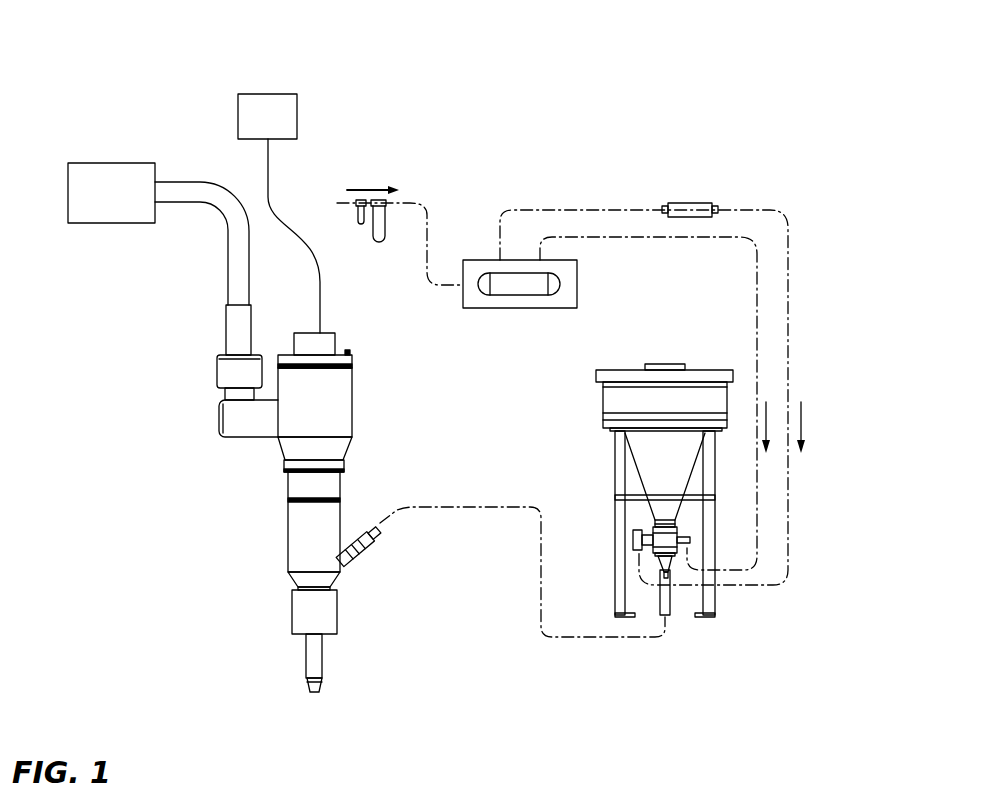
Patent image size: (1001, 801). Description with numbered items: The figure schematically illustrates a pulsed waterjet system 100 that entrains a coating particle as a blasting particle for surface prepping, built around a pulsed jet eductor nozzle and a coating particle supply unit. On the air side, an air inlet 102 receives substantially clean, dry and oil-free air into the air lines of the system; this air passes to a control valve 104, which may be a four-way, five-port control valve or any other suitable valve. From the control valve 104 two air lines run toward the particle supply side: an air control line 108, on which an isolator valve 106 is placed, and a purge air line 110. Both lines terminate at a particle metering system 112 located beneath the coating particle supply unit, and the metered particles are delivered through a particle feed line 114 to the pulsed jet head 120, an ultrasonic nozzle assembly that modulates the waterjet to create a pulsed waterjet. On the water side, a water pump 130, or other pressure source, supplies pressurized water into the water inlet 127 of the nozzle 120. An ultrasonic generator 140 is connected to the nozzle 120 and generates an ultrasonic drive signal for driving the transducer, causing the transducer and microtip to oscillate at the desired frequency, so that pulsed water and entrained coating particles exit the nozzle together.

The pulsed waterjet system 100 is at (792, 122).
The air inlet 102 is at (388, 222).
The control valve 104 is at (527, 280).
The isolator valve 106 is at (678, 203).
The air control line 108 is at (788, 367).
The purge air line 110 is at (755, 542).
The particle metering system 112 is at (691, 624).
The particle feed line 114 is at (563, 637).
The pulsed jet head 120 is at (247, 552).
The water inlet 127 is at (232, 328).
The water pump 130 is at (97, 163).
The ultrasonic generator 140 is at (238, 98).